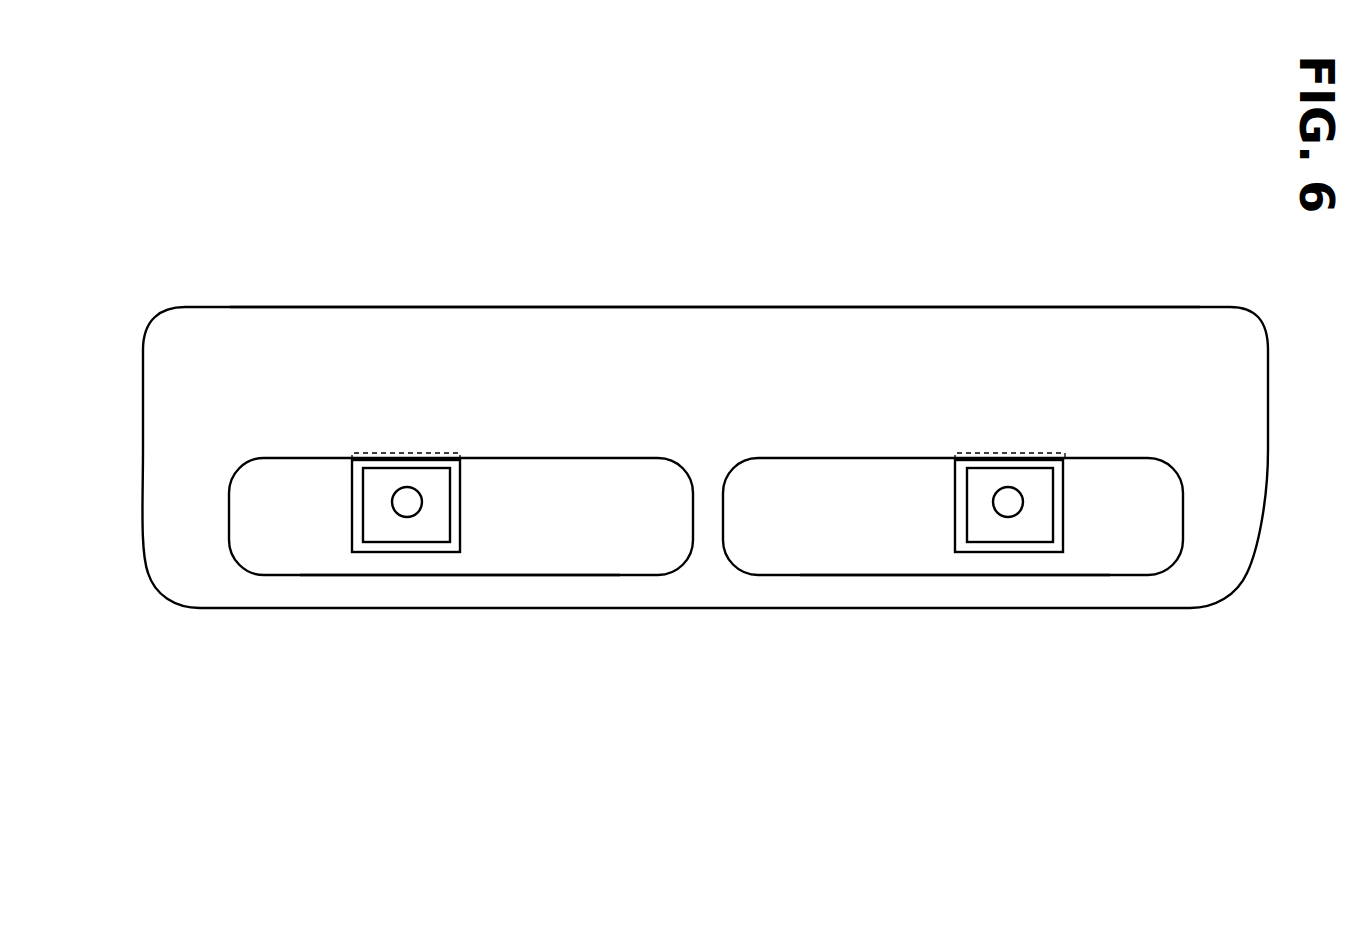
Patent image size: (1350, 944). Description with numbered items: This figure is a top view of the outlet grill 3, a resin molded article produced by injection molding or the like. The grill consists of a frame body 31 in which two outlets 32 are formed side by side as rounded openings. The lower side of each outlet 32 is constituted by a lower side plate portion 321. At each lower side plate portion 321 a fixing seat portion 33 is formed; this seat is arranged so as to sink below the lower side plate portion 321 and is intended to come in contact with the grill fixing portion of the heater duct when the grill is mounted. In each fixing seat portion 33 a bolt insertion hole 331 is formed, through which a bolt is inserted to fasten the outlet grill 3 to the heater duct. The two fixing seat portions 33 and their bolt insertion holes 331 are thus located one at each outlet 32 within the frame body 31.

The outlet grill 3 is at (1085, 258).
The frame body 31 is at (528, 345).
The outlet 32 is at (558, 520).
The lower side plate portion 321 is at (630, 553).
The fixing seat portion 33 is at (431, 526).
The bolt insertion hole 331 is at (398, 502).